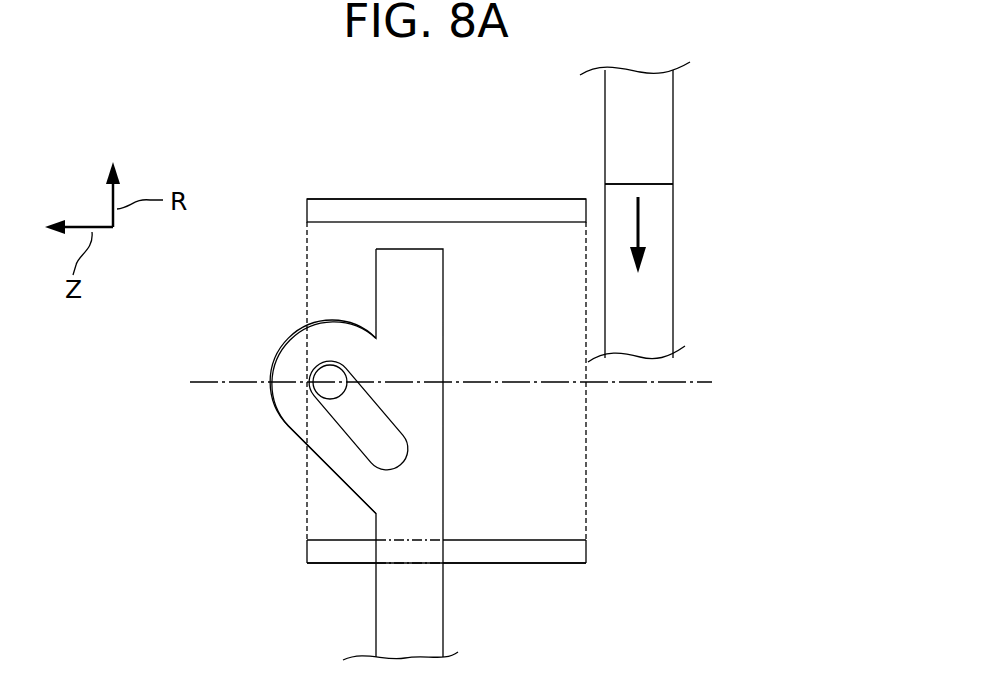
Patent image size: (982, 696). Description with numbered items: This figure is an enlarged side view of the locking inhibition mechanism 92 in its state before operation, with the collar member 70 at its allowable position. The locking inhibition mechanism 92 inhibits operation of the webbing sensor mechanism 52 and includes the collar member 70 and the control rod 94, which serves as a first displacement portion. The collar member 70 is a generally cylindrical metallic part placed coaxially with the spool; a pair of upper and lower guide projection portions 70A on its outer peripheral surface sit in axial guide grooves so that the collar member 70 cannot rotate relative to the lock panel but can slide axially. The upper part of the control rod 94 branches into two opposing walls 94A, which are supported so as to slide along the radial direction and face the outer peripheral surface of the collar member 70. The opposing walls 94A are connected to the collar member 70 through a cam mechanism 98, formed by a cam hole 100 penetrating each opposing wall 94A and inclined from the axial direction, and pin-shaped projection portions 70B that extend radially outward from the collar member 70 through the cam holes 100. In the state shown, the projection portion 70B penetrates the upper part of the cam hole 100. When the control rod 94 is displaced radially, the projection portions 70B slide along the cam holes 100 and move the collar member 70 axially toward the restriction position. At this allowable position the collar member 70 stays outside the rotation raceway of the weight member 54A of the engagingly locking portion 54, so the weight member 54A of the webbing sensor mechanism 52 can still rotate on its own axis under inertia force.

The collar member 70 is at (370, 197).
The locking inhibition mechanism 92 is at (409, 372).
The guide projection portions 70A is at (497, 210).
The projection portions 70B is at (331, 366).
The cam mechanism 98 is at (384, 366).
The cam hole 100 is at (376, 413).
The control rod 94 is at (444, 595).
The opposing walls 94A is at (279, 413).
The engagingly locking portion 54 is at (674, 112).
The webbing sensor mechanism 52 is at (705, 212).
The weight member 54A is at (674, 148).